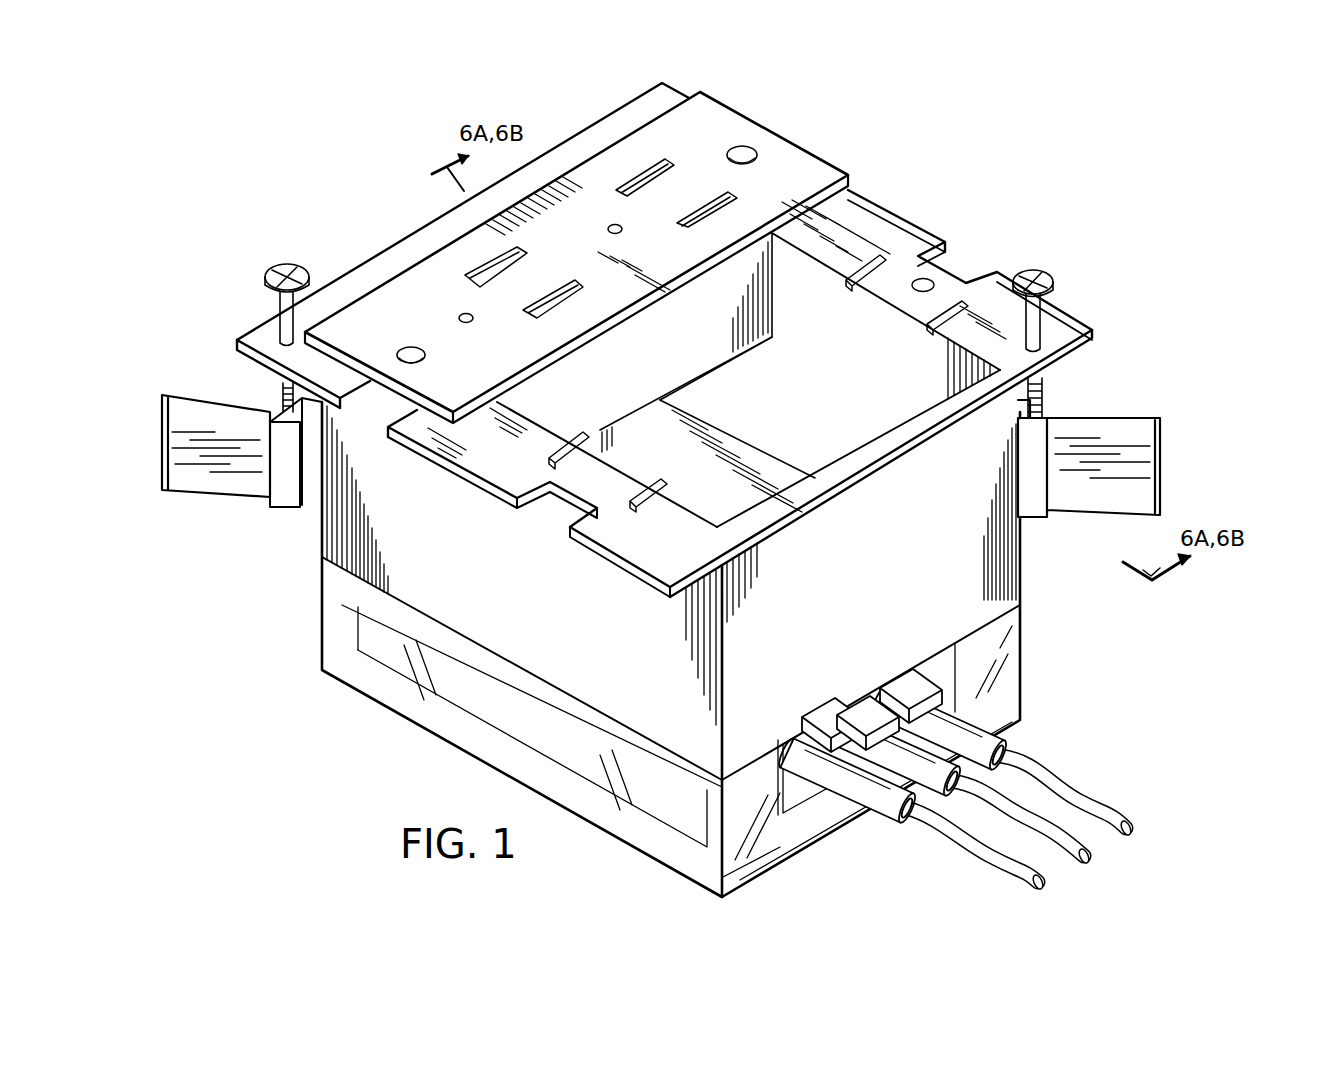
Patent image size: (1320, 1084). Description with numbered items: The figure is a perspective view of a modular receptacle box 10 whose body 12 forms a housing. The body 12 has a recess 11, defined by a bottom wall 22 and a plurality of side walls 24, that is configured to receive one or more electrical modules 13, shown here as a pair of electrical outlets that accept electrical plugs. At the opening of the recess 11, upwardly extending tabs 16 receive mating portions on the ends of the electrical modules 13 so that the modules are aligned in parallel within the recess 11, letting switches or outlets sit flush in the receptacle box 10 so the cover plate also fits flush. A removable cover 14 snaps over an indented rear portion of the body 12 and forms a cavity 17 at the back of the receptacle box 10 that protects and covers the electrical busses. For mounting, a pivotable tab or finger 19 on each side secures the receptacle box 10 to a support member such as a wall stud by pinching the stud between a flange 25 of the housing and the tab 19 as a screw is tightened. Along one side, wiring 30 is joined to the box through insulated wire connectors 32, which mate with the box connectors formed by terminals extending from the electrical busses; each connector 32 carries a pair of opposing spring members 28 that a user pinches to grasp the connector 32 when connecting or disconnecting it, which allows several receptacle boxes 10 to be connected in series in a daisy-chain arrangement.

The modular receptacle box 10 is at (1010, 130).
The recess 11 is at (843, 393).
The body 12 is at (353, 604).
The electrical module 13 is at (413, 273).
The removable cover 14 is at (323, 643).
The tabs 16 is at (867, 262).
The cavity 17 is at (388, 686).
The pivotable tab 19 is at (202, 398).
The bottom wall 22 is at (703, 435).
The side walls 24 is at (918, 263).
The flange 25 is at (1087, 322).
The spring members 28 is at (828, 722).
The electrical wires 30 is at (1117, 822).
The insulated wire connectors 32 is at (980, 730).